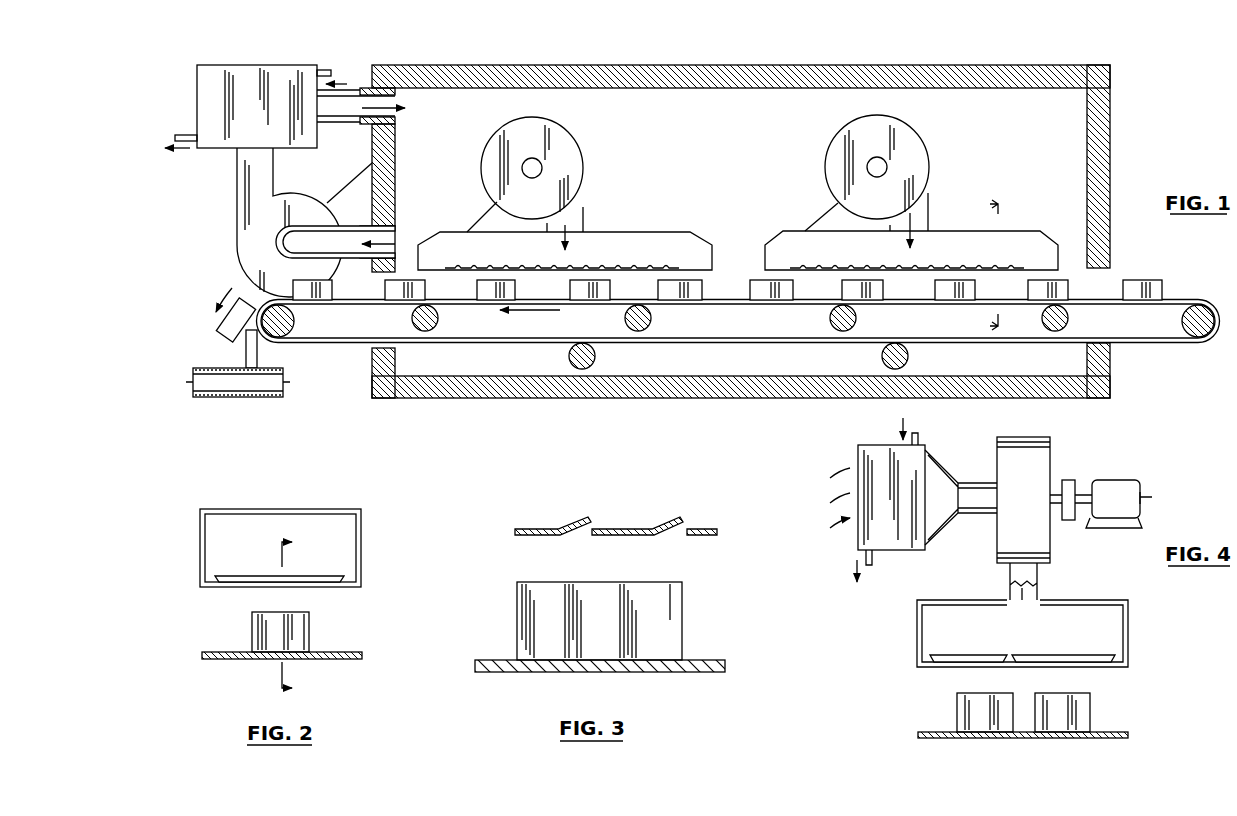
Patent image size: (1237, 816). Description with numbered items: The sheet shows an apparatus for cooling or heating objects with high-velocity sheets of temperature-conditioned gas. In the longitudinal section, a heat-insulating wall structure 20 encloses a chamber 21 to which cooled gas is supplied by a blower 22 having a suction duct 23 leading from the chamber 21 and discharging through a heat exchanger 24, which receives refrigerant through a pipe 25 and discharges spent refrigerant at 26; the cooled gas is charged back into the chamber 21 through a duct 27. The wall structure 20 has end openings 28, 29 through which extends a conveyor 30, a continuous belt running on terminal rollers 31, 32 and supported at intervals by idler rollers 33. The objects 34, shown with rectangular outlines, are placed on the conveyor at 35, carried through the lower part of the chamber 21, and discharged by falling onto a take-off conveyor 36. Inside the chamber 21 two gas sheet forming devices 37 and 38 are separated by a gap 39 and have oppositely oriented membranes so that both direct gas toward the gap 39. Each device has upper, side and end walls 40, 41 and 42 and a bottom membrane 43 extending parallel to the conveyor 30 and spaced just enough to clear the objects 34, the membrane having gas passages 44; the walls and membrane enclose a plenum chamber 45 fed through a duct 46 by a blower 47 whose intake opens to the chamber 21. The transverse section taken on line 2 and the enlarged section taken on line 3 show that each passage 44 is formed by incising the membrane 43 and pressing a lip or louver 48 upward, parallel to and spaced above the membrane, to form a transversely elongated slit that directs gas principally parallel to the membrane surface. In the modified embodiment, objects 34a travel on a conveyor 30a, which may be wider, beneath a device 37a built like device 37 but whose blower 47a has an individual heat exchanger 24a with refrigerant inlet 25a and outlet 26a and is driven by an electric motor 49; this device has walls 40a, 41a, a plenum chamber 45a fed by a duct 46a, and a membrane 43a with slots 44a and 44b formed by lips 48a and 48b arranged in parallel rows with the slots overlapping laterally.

In FIG. 1, the wall structure 20 is at (578, 66).
In FIG. 1, the chamber 21 is at (708, 149).
In FIG. 1, the blower 22 is at (240, 223).
In FIG. 1, the suction duct 23 is at (396, 234).
In FIG. 1, the heat exchanger 24 is at (230, 101).
In FIG. 1, the pipe 25 is at (323, 70).
In FIG. 1, the refrigerant discharge 26 is at (183, 135).
In FIG. 1, the duct 27 is at (368, 122).
In FIG. 1, the end opening 28 is at (1099, 279).
In FIG. 1, the end opening 29 is at (378, 297).
In FIG. 1, the conveyor 30 is at (1114, 304).
In FIG. 2, the conveyor 30 is at (333, 652).
In FIG. 3, the conveyor 30 is at (666, 672).
In FIG. 1, the terminal roller 31 is at (1180, 325).
In FIG. 1, the terminal roller 32 is at (296, 322).
In FIG. 1, the idler roller 33 is at (437, 321).
In FIG. 1, the object 34 is at (516, 292).
In FIG. 2, the object 34 is at (259, 630).
In FIG. 3, the object 34 is at (682, 632).
In FIG. 1, the loading point 35 is at (1186, 297).
In FIG. 1, the take-off conveyor 36 is at (267, 374).
In FIG. 1, the gas sheet forming device 37 is at (1005, 232).
In FIG. 1, the gas sheet forming device 38 is at (623, 232).
In FIG. 1, the gap 39 is at (732, 245).
In FIG. 1, the upper wall 40 is at (655, 232).
In FIG. 2, the upper wall 40 is at (293, 509).
In FIG. 2, the side wall 41 is at (200, 530).
In FIG. 1, the end wall 42 is at (766, 245).
In FIG. 1, the membrane 43 is at (840, 270).
In FIG. 2, the membrane 43 is at (350, 588).
In FIG. 3, the membrane 43 is at (626, 536).
In FIG. 1, the gas passage 44 is at (888, 264).
In FIG. 2, the gas passage 44 is at (222, 588).
In FIG. 3, the gas passage 44 is at (578, 536).
In FIG. 1, the plenum chamber 45 is at (944, 256).
In FIG. 2, the plenum chamber 45 is at (239, 542).
In FIG. 1, the duct 46 is at (584, 214).
In FIG. 1, the blower 47 is at (573, 150).
In FIG. 1, the section line 2— 2 is at (986, 263).
In FIG. 2, the section line 3— 3 is at (295, 615).
In FIG. 2, the lip or louver 48 is at (253, 575).
In FIG. 3, the lip or louver 48 is at (586, 517).
In FIG. 4, the heat exchanger 24a is at (880, 448).
In FIG. 4, the refrigerant inlet 25a is at (922, 442).
In FIG. 4, the refrigerant outlet 26a is at (876, 562).
In FIG. 4, the conveyor 30a is at (1020, 740).
In FIG. 4, the object 34a is at (958, 715).
In FIG. 4, the gas sheet forming device 37a is at (914, 617).
In FIG. 4, the upper wall 40a is at (1100, 600).
In FIG. 4, the side wall 41a is at (1129, 615).
In FIG. 4, the membrane 43a is at (926, 668).
In FIG. 4, the slot 44a is at (1002, 668).
In FIG. 4, the slot 44b is at (1090, 668).
In FIG. 4, the plenum chamber 45a is at (966, 630).
In FIG. 4, the duct 46a is at (1006, 576).
In FIG. 4, the blower 47a is at (1045, 442).
In FIG. 4, the lip 48a is at (955, 655).
In FIG. 4, the lip 48b is at (1049, 655).
In FIG. 4, the electric motor 49 is at (1118, 481).